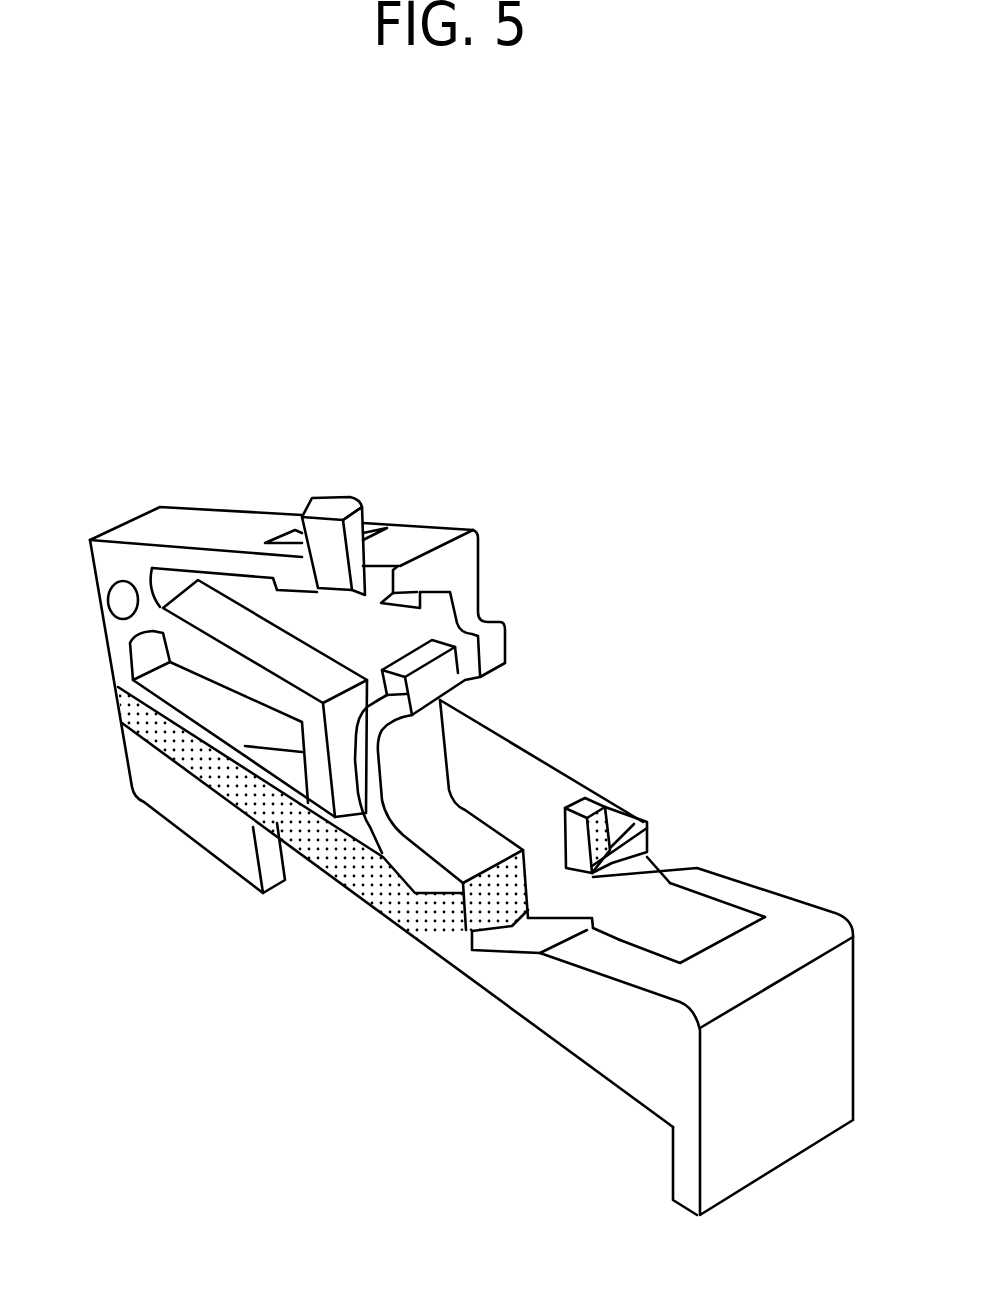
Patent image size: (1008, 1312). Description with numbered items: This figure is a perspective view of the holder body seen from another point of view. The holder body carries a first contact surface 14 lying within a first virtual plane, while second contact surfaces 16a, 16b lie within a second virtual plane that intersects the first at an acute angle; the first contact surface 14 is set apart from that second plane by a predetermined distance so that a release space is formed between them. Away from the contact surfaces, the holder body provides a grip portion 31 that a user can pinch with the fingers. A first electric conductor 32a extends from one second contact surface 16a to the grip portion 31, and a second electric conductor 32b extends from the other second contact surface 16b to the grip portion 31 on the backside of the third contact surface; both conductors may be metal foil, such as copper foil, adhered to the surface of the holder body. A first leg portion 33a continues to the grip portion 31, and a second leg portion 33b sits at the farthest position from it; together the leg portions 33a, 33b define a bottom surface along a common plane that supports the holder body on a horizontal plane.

The first contact surface 14 is at (793, 913).
The grip portion 31 is at (123, 742).
The first leg portion 33a is at (157, 790).
The second leg portion 33b is at (687, 1188).
The first electric conductor 32a is at (612, 847).
The second electric conductor 32b is at (373, 890).
The second contact surface 16a is at (622, 818).
The second contact surface 16b is at (488, 932).